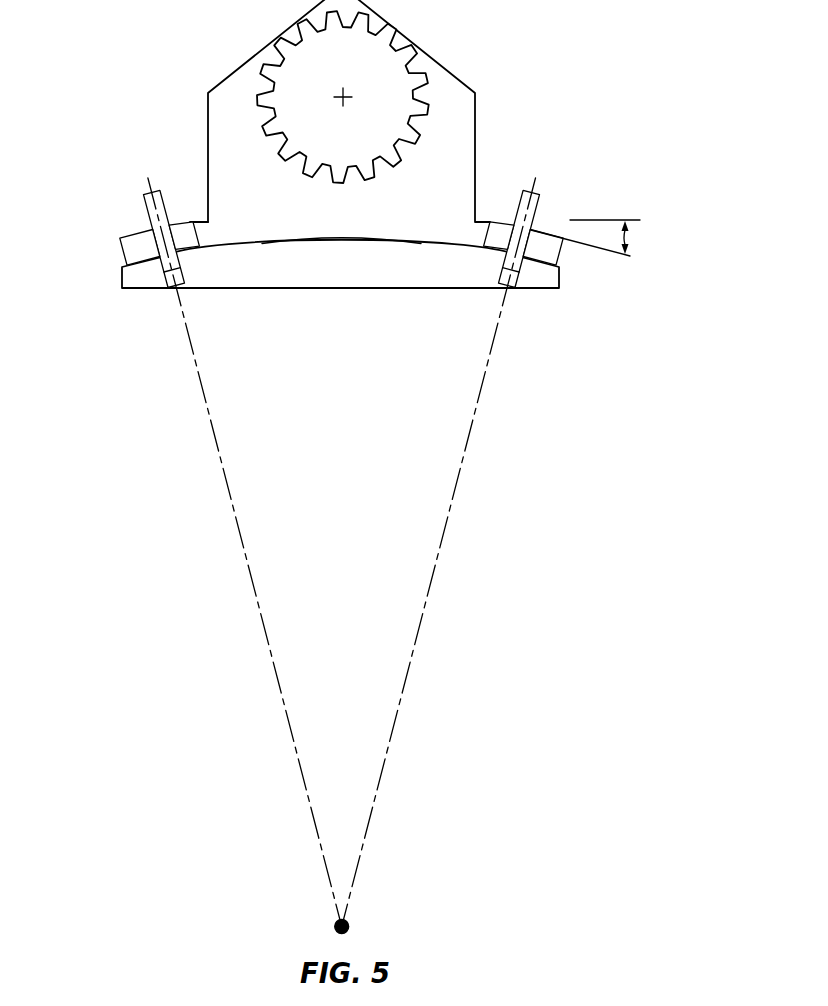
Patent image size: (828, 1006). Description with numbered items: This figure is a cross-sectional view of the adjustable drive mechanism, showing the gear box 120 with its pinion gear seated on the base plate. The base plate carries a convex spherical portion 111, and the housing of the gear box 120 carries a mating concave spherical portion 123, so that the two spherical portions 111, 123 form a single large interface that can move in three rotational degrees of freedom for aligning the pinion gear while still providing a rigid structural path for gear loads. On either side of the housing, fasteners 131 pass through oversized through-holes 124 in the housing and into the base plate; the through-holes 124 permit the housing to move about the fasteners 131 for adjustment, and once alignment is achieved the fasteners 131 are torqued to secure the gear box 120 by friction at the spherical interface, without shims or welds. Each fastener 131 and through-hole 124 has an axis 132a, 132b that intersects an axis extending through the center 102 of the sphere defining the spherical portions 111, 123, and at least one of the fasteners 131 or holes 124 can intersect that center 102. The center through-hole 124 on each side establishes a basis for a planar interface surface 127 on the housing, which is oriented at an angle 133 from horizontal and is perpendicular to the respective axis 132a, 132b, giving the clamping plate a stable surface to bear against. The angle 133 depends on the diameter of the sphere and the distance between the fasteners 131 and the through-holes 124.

The center of the sphere 102 is at (350, 929).
The spherical portion of the base plate 111 is at (213, 248).
The gear box 120 is at (184, 84).
The spherical portion of the housing 123 is at (189, 221).
The through-holes 124 is at (148, 235).
The interface surface 127 is at (120, 237).
The fasteners 131 is at (143, 202).
The axis 132a is at (202, 410).
The axis 132b is at (479, 418).
The angle 133 is at (627, 239).